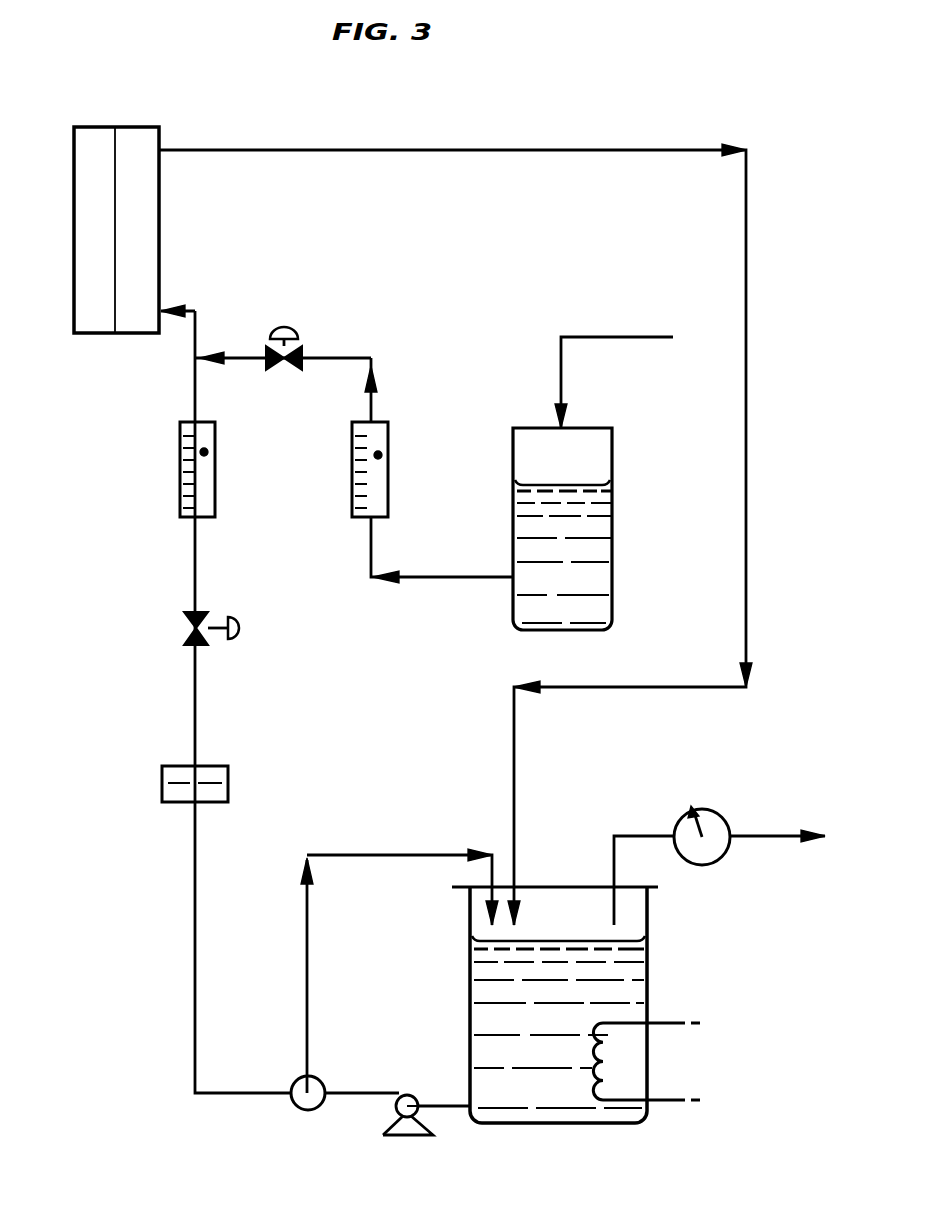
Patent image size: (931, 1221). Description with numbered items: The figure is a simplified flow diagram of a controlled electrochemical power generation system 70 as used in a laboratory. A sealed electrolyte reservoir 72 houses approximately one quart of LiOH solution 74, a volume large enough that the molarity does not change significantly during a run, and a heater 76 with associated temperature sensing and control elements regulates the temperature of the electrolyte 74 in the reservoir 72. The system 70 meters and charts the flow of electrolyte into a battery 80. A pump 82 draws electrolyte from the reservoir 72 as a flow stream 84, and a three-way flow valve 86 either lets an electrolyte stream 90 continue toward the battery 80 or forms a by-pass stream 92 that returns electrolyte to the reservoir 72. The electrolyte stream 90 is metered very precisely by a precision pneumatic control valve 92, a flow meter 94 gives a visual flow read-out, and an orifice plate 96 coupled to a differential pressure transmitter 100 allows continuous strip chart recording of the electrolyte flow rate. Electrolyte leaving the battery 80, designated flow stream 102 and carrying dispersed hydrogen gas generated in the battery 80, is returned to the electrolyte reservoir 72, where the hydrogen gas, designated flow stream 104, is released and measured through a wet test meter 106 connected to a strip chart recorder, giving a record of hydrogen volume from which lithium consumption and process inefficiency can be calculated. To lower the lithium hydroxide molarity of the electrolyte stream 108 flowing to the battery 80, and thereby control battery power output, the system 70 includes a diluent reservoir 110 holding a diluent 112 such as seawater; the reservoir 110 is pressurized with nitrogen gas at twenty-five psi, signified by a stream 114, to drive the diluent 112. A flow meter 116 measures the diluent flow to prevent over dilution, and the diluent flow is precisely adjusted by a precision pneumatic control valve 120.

The controlled electrochemical power generation system 70 is at (552, 110).
The sealed electrolyte reservoir 72 is at (648, 898).
The LiOH solution 74 is at (640, 970).
The heater 76 is at (600, 1055).
The battery 80 is at (130, 128).
The pump 82 is at (408, 1096).
The flow stream 84 is at (372, 1066).
The three-way flow valve 86 is at (300, 1086).
The electrolyte stream 90 is at (197, 392).
The by-pass stream / precision pneumatic control valve 92 is at (184, 620).
The flow meter 94 is at (207, 493).
The orifice plate 96 is at (222, 783).
The differential pressure transmitter 100 is at (214, 776).
The flow stream 102 is at (268, 150).
The flow stream 104 is at (640, 836).
The wet test meter 106 is at (712, 815).
The electrolyte stream 108 is at (183, 311).
The diluent reservoir 110 is at (613, 455).
The diluent 112 is at (595, 576).
The stream 114 is at (590, 337).
The flow meter 116 is at (385, 436).
The precision pneumatic control valve 120 is at (302, 352).